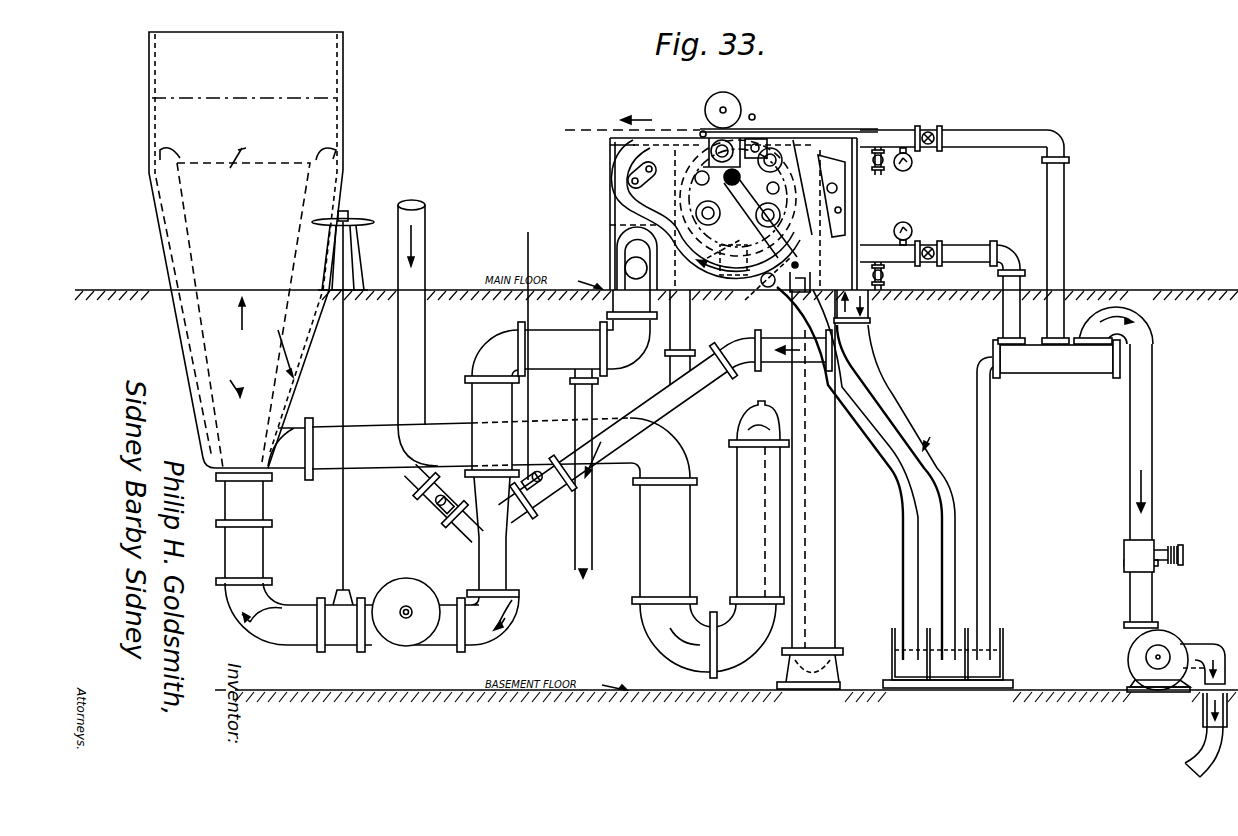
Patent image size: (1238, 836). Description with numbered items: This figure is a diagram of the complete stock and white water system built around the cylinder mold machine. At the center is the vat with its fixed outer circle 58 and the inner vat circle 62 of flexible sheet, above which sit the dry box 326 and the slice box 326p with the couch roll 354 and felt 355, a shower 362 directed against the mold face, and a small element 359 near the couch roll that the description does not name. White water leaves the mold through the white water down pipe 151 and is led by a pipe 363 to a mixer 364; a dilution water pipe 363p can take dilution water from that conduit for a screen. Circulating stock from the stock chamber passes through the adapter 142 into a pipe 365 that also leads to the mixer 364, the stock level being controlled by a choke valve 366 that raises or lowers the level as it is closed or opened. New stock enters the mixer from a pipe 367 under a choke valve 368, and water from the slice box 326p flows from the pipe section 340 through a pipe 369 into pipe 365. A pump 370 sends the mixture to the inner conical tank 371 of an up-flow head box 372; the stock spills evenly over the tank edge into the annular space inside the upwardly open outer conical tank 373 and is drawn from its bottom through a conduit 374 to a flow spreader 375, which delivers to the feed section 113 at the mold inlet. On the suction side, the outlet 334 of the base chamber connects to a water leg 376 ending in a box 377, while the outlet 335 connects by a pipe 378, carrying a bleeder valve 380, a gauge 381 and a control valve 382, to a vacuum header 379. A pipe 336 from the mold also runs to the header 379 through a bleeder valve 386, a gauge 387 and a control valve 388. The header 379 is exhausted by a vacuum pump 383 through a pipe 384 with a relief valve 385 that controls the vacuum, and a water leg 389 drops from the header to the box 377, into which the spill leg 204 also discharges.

The up-flow head box 372 is at (347, 107).
The inner conical tank 371 is at (177, 207).
The outer conical tank 373 is at (166, 250).
The new stock pipe 367 is at (425, 233).
The conduit 374 is at (330, 467).
The choke valve 368 is at (425, 488).
The mixer 364 is at (484, 547).
The choke valve 366 is at (546, 505).
The pump 370 is at (407, 632).
The white water pipe 363 is at (497, 342).
The dilution water pipe 363p is at (585, 540).
The white water down pipe 151 is at (622, 300).
The slice box water pipe 369 is at (680, 342).
The circulating stock pipe 365 is at (707, 377).
The flow spreader 375 is at (737, 538).
The water leg 376 is at (870, 460).
The spill leg 204 is at (860, 363).
The adapter 142 is at (855, 312).
The feed section 113 is at (813, 337).
The box 377 is at (892, 640).
The water leg 389 is at (982, 490).
The vacuum header 379 is at (1057, 357).
The pipe 378 is at (960, 246).
The control valve 382 is at (927, 245).
The gauge 381 is at (898, 223).
The bleeder valve 380 is at (885, 277).
The pipe 336 is at (880, 137).
The control valve 388 is at (932, 130).
The gauge 387 is at (913, 167).
The bleeder valve 386 is at (880, 172).
The pipe 384 is at (1140, 418).
The relief valve 385 is at (1153, 540).
The vacuum pump 383 is at (1167, 640).
The felt 355 is at (818, 130).
The couch roll 354 is at (717, 93).
The pin 359 is at (752, 114).
The shower 362 is at (703, 131).
The dry box 326 is at (747, 140).
The slice box 326p is at (735, 140).
The inner vat circle 62 is at (663, 227).
The pipe section 340 is at (703, 180).
The fixed outer circle 58 is at (770, 262).
The outlet 334 is at (722, 294).
The outlet 335 is at (775, 292).